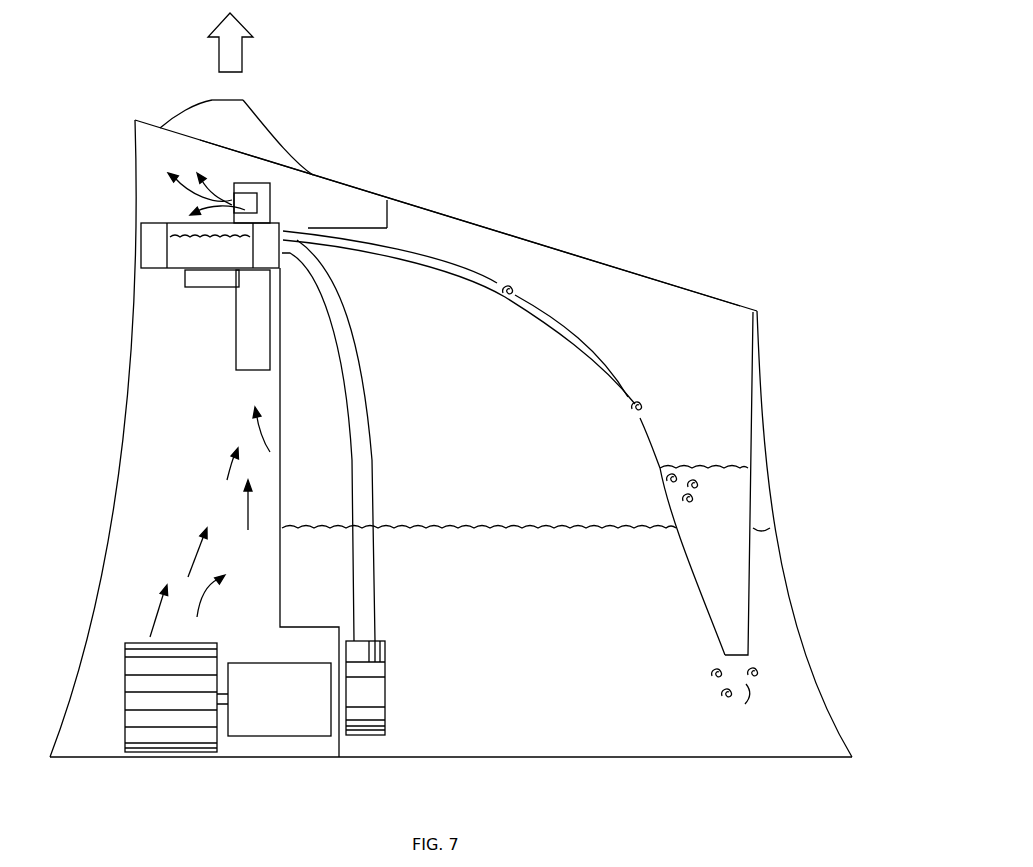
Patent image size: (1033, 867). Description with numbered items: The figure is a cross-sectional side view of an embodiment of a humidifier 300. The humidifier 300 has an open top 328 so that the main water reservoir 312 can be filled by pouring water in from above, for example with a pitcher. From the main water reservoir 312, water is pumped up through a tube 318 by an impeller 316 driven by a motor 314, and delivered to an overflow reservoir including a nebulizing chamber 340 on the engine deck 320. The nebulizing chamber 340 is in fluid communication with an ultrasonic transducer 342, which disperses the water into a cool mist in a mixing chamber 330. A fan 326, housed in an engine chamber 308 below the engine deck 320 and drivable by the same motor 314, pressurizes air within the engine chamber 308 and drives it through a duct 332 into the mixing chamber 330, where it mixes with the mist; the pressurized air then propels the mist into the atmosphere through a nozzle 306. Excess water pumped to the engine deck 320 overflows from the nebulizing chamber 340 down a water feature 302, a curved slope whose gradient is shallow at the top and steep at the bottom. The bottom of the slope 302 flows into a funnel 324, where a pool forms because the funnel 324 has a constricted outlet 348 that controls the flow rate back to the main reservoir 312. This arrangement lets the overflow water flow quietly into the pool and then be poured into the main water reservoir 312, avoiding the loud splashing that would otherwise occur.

The humidifier 300 is at (669, 72).
The water feature 302 is at (547, 323).
The nozzle 306 is at (242, 133).
The engine chamber 308 is at (262, 615).
The main water reservoir 312 is at (557, 640).
The motor 314 is at (279, 699).
The impeller 316 is at (368, 698).
The tube 318 is at (362, 437).
The engine deck 320 is at (124, 270).
The funnel 324 is at (718, 570).
The fan 326 is at (123, 705).
The open top 328 is at (597, 244).
The mixing chamber 330 is at (160, 158).
The duct 332 is at (257, 312).
The nebulizing chamber 340 is at (225, 262).
The ultrasonic transducer 342 is at (205, 280).
The constricted outlet 348 is at (750, 690).